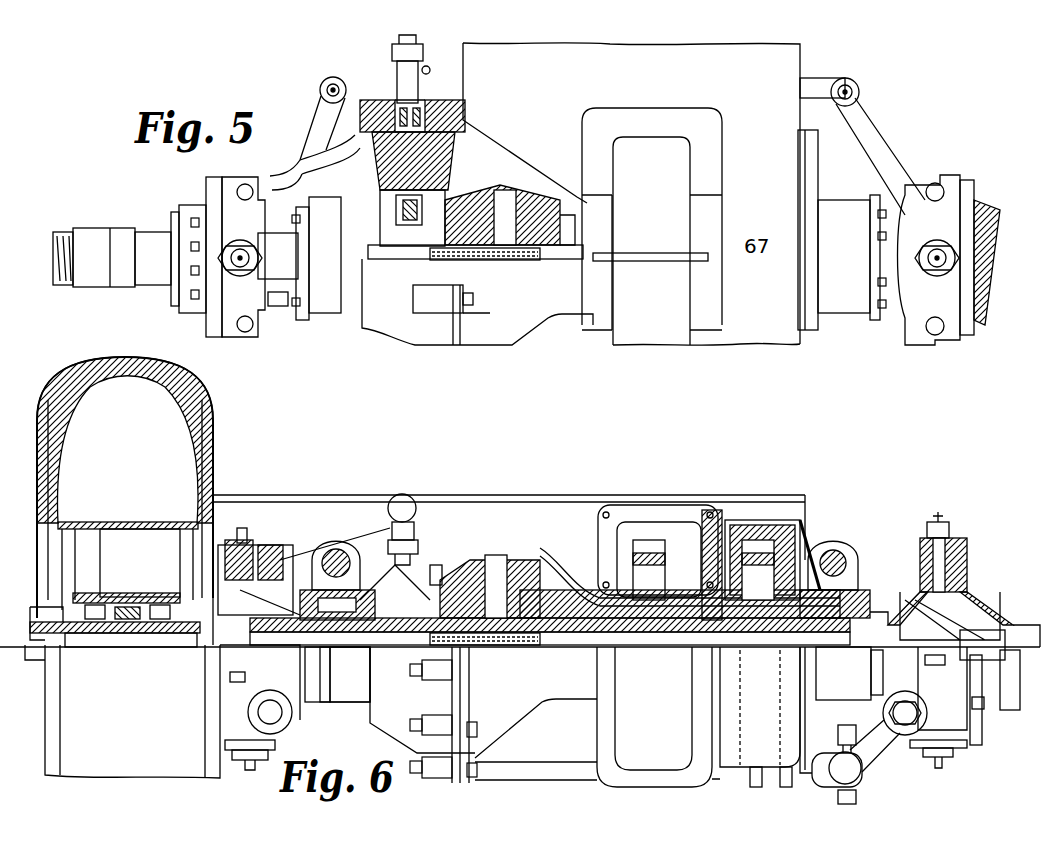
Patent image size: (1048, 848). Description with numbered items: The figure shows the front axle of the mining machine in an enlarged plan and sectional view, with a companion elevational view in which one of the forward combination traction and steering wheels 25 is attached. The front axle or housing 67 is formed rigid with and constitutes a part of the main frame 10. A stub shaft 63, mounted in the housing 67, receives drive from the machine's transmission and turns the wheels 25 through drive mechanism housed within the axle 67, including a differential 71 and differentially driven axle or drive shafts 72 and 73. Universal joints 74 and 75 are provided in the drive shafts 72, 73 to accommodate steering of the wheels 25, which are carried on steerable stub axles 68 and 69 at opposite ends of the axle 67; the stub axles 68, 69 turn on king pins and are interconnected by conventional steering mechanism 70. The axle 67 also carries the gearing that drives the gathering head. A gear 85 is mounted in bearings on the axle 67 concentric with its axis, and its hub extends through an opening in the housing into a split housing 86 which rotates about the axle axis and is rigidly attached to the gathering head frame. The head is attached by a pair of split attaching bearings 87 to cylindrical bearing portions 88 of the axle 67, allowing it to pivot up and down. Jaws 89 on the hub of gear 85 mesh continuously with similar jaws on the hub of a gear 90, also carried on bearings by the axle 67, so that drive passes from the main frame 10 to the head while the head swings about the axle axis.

In FIG. 5, the main frame 10 is at (772, 68).
In FIG. 6, the main frame 10 is at (580, 520).
In FIG. 6, the forward combination traction and steering wheels 25 is at (118, 352).
In FIG. 5, the stub shaft 63 is at (400, 105).
In FIG. 5, the front axle or housing 67 is at (581, 302).
In FIG. 6, the front axle or housing 67 is at (563, 592).
In FIG. 5, the steerable stub axle 68 is at (120, 242).
In FIG. 6, the steerable stub axle 68 is at (143, 640).
In FIG. 5, the steerable stub axle 69 is at (987, 225).
In FIG. 6, the steerable stub axle 69 is at (1010, 622).
In FIG. 5, the steering mechanism 70 is at (300, 115).
In FIG. 6, the steering mechanism 70 is at (808, 793).
In FIG. 5, the differential 71 is at (515, 185).
In FIG. 6, the differential 71 is at (482, 568).
In FIG. 5, the axle or drive shaft 72 is at (575, 258).
In FIG. 6, the axle or drive shaft 72 is at (590, 640).
In FIG. 5, the axle or drive shaft 73 is at (385, 255).
In FIG. 6, the axle or drive shaft 73 is at (390, 640).
In FIG. 6, the universal joint 74 is at (918, 630).
In FIG. 6, the universal joint 75 is at (266, 612).
In FIG. 6, the gear 85 is at (760, 545).
In FIG. 5, the split housing 86 is at (652, 226).
In FIG. 6, the split housing 86 is at (670, 530).
In FIG. 6, the split attaching bearings 87 is at (326, 548).
In FIG. 5, the cylindrical bearing portions 88 is at (326, 255).
In FIG. 6, the cylindrical bearing portions 88 is at (340, 690).
In FIG. 6, the jaws 89 is at (692, 590).
In FIG. 6, the gear 90 is at (640, 545).